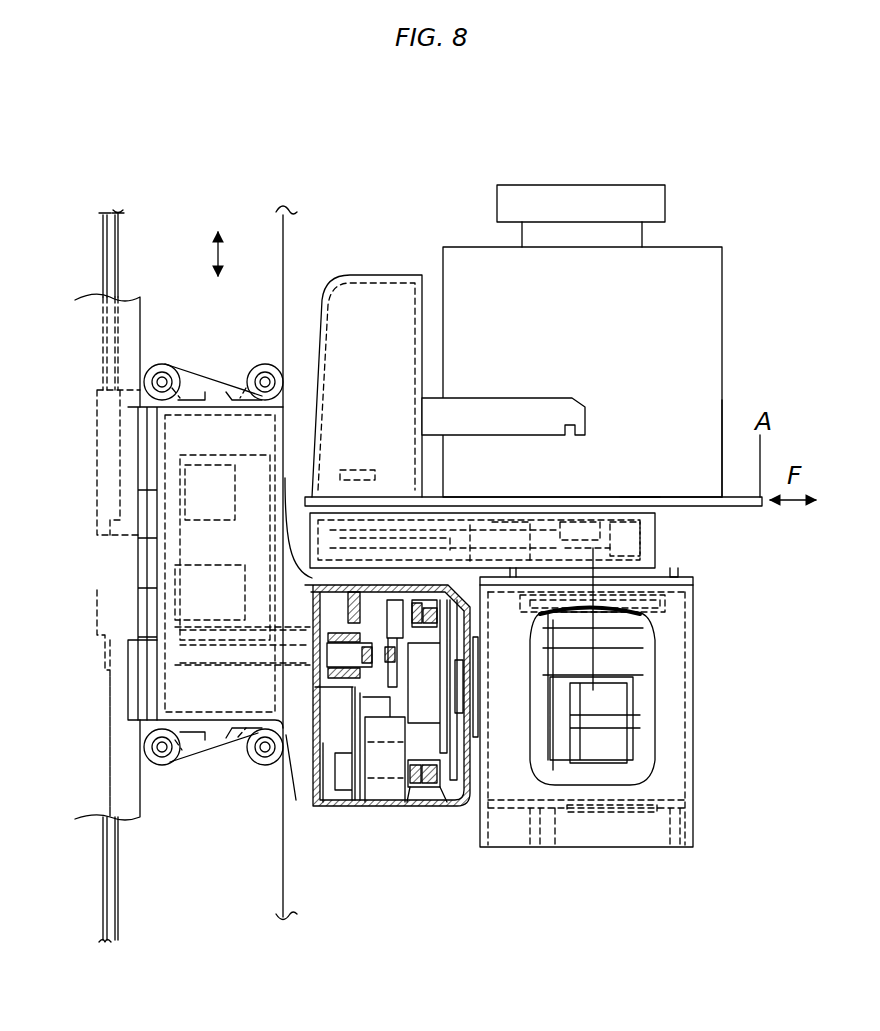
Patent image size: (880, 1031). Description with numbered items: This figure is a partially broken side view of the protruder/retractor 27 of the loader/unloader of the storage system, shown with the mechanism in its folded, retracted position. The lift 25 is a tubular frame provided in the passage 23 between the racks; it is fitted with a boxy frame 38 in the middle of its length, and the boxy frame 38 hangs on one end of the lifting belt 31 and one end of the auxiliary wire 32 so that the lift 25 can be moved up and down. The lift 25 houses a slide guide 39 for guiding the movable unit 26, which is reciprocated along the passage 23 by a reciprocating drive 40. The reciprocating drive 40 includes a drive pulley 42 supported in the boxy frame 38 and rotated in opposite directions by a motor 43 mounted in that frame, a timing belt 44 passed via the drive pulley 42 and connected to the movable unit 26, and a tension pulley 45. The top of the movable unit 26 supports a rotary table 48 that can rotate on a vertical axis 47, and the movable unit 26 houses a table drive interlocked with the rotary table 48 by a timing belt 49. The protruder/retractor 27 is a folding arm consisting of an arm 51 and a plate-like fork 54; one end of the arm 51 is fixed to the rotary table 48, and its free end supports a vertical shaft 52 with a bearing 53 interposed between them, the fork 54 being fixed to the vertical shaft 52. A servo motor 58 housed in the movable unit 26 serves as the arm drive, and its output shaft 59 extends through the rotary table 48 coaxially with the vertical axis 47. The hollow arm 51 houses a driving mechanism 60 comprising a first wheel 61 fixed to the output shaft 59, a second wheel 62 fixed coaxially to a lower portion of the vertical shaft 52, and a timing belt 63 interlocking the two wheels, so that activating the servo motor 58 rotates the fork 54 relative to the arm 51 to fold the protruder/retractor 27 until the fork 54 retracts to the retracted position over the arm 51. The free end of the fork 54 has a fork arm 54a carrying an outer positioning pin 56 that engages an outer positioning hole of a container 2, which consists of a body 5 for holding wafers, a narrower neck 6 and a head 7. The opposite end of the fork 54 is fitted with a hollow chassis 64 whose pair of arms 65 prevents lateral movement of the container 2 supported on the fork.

The container 2 is at (588, 165).
The body 5 is at (708, 284).
The neck 6 is at (562, 230).
The head 7 is at (577, 200).
The passage 23 is at (502, 992).
The lift 25 is at (372, 808).
The movable unit 26 is at (516, 830).
The protruder/retractor 27 is at (716, 522).
The lifting belt 31 is at (120, 240).
The auxiliary wire 32 is at (103, 253).
The boxy frame 38 is at (212, 740).
The slide guide 39 is at (433, 613).
The reciprocating drive 40 is at (333, 690).
The drive pulley 42 is at (190, 680).
The motor 43 is at (138, 575).
The timing belt 44 is at (232, 748).
The tension pulley 45 is at (345, 655).
The vertical axis 47 is at (640, 655).
The rotary table 48 is at (660, 572).
The timing belt 49 is at (640, 607).
The arm 51 is at (300, 577).
The vertical shaft 52 is at (362, 470).
The bearing 53 is at (312, 548).
The fork 54 is at (686, 497).
The fork arm 54a is at (638, 497).
The outer positioning pin 56 is at (498, 500).
The servo motor 58 is at (610, 762).
The output shaft 59 is at (660, 535).
The driving mechanism 60 is at (521, 524).
The first wheel 61 is at (575, 533).
The second wheel 62 is at (305, 552).
The timing belt 63 is at (476, 500).
The chassis 64 is at (368, 300).
The arm 65 is at (535, 408).